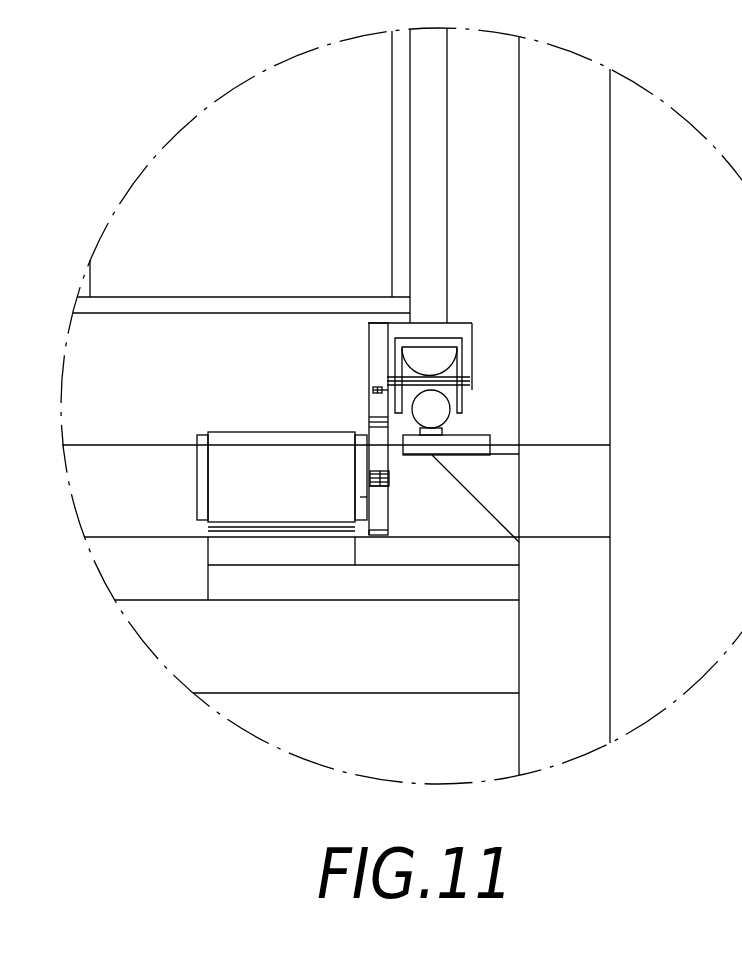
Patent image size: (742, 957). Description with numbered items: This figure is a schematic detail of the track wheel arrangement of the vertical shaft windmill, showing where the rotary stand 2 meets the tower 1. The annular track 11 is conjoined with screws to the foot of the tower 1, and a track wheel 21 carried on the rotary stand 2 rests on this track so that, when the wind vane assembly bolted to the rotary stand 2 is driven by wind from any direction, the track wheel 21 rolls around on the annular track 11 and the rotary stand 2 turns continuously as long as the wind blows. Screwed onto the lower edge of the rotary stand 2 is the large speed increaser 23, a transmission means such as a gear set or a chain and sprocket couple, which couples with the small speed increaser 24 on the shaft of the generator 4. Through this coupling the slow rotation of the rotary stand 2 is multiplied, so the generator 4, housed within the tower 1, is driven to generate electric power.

The tower 1 is at (561, 108).
The rotary stand 2 is at (392, 265).
The generator 4 is at (257, 463).
The annular track 11 is at (433, 416).
The track wheel 21 is at (455, 368).
The large speed increaser 23 is at (380, 418).
The small speed increaser 24 is at (382, 515).